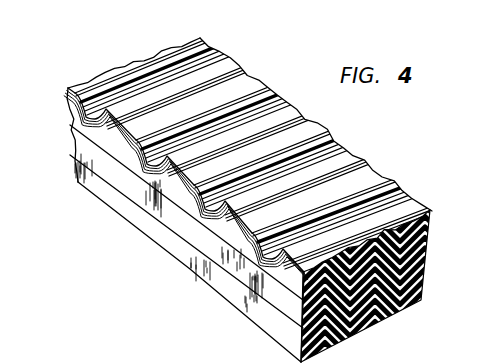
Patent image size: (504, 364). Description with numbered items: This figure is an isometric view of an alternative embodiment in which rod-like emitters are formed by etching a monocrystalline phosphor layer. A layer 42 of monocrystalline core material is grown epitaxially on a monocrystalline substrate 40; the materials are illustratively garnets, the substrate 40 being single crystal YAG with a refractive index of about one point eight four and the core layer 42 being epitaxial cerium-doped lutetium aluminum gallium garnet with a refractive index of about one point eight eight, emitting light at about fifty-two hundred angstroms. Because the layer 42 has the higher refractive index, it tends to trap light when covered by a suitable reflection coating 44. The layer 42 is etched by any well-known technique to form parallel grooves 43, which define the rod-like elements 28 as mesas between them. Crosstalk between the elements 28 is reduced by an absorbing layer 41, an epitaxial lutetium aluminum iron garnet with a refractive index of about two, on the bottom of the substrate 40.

The rod-like element 28 is at (355, 173).
The parallel grooves 43 is at (214, 52).
The monocrystalline substrate 40 is at (110, 163).
The layer of monocrystalline core material 42 is at (185, 198).
The absorbing layer 41 is at (188, 257).
The reflection coating 44 is at (430, 211).